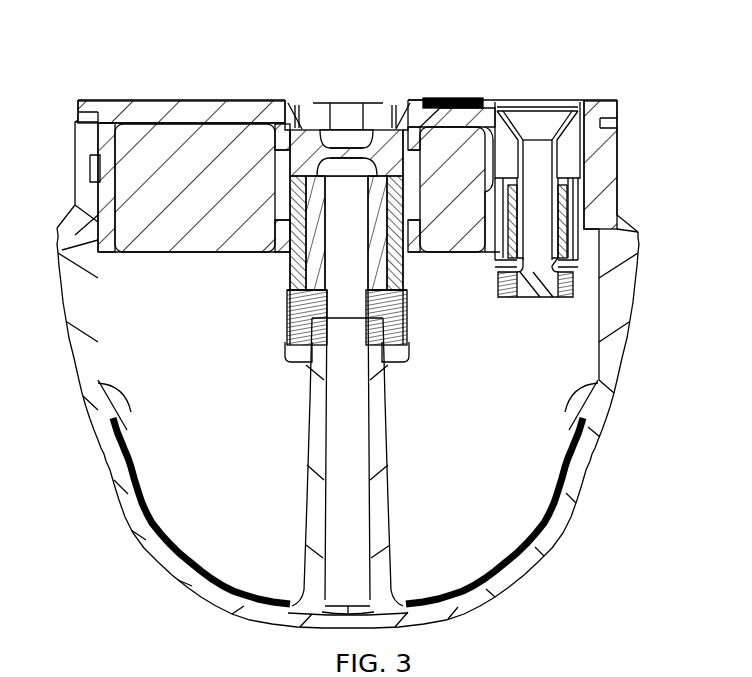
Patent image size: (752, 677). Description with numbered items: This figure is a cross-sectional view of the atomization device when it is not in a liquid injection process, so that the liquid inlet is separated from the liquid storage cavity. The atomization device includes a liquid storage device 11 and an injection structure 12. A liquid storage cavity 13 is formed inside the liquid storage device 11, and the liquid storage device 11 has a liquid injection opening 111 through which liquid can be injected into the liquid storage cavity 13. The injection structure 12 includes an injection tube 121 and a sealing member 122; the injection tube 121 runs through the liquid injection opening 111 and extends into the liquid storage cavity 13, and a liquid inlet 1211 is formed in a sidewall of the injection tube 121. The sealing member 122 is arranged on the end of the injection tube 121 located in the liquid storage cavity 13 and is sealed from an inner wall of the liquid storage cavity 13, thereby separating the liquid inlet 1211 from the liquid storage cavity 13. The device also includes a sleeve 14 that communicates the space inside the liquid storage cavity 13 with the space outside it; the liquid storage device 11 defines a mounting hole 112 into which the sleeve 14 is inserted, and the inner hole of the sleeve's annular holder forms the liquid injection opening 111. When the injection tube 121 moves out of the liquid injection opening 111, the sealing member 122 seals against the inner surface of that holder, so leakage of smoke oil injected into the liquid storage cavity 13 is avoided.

The liquid storage device 11 is at (98, 446).
The injection structure 12 is at (576, 97).
The liquid storage cavity 13 is at (498, 464).
The sleeve 14 is at (568, 201).
The liquid injection opening 111 is at (570, 265).
The mounting hole 112 is at (492, 238).
The injection tube 121 is at (556, 160).
The sealing member 122 is at (578, 306).
The liquid inlet 1211 is at (558, 252).